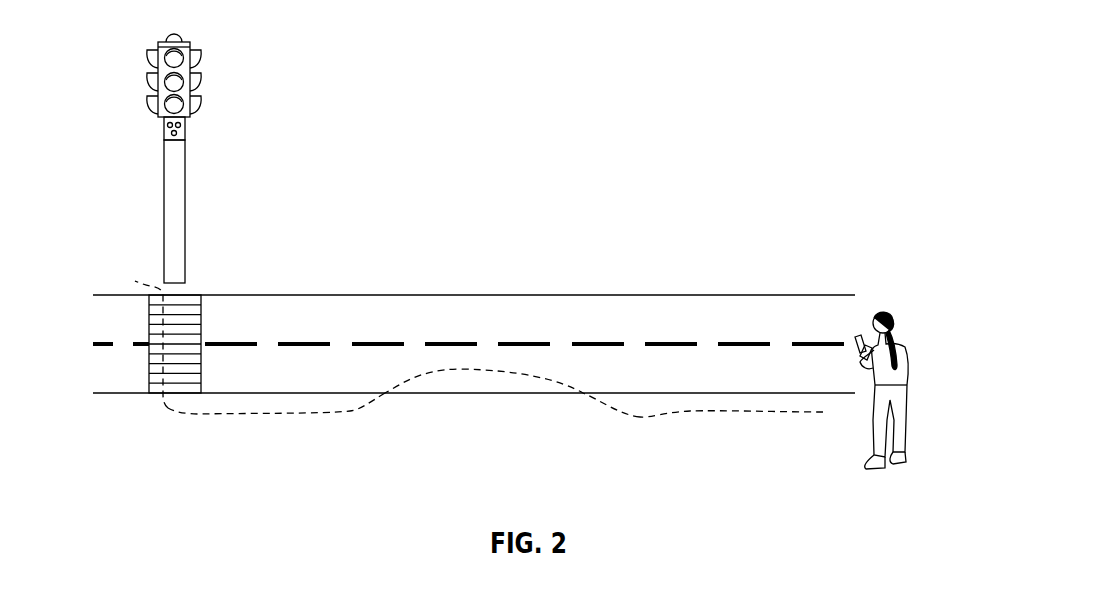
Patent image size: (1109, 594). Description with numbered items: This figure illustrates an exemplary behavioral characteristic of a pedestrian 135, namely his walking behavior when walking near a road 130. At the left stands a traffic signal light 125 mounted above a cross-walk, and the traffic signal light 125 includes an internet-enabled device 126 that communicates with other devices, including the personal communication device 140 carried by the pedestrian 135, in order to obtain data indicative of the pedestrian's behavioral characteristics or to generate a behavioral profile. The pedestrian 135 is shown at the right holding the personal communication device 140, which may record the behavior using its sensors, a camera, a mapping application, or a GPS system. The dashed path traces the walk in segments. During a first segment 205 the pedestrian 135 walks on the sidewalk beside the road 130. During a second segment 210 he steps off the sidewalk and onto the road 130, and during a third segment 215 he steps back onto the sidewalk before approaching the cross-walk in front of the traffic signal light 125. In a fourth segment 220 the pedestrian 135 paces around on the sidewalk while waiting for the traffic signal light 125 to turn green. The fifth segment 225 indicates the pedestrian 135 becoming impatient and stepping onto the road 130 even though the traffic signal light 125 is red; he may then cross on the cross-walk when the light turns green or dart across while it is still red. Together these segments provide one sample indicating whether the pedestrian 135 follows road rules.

The traffic signal light 125 is at (208, 52).
The internet-enabled device 126 is at (164, 128).
The road 130 is at (523, 263).
The pedestrian 135 is at (896, 318).
The personal communication device 140 is at (856, 333).
The first segment 205 is at (668, 416).
The second segment 210 is at (495, 381).
The third segment 215 is at (312, 414).
The fourth segment 220 is at (153, 405).
The fifth segment 225 is at (149, 386).